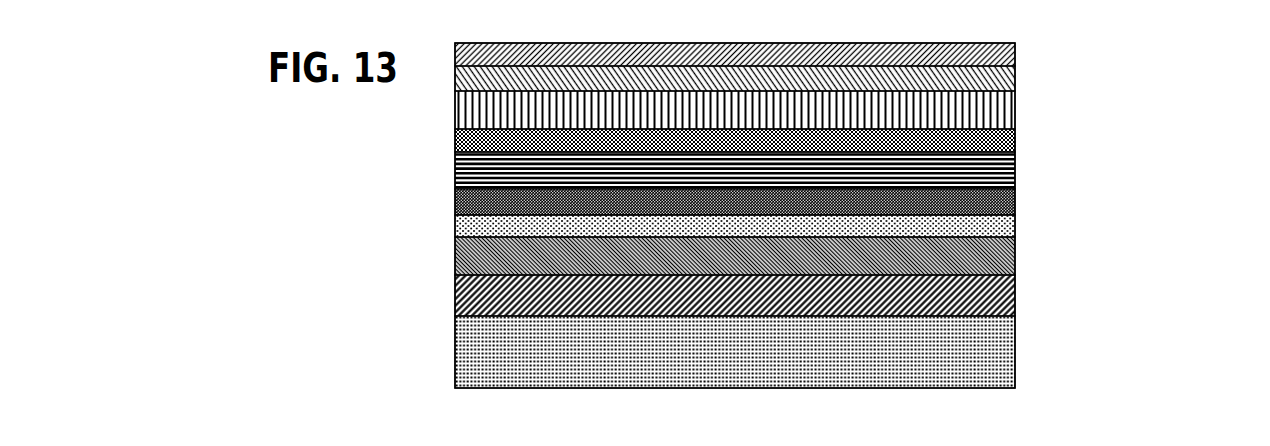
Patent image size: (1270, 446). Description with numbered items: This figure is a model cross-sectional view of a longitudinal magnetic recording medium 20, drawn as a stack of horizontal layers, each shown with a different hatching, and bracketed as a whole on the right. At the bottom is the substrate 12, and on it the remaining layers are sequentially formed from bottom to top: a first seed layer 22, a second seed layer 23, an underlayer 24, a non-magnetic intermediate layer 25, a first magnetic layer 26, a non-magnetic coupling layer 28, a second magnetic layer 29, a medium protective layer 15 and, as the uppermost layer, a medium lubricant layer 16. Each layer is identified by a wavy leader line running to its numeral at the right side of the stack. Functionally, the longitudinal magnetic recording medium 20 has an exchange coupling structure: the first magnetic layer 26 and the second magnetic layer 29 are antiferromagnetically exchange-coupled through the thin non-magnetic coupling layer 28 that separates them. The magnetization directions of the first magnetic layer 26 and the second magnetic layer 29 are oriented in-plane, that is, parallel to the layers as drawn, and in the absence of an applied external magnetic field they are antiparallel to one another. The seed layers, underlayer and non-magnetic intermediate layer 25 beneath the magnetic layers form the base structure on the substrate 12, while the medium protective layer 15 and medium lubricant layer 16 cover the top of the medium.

The medium lubricant layer 16 is at (1015, 48).
The medium protective layer 15 is at (1015, 78).
The second magnetic layer 29 is at (1005, 115).
The non-magnetic coupling layer 28 is at (1015, 138).
The first magnetic layer 26 is at (1015, 167).
The non-magnetic intermediate layer 25 is at (1015, 200).
The underlayer 24 is at (1005, 232).
The second seed layer 23 is at (1015, 258).
The first seed layer 22 is at (1015, 295).
The substrate 12 is at (998, 348).
The longitudinal magnetic recording medium 20 is at (1186, 25).